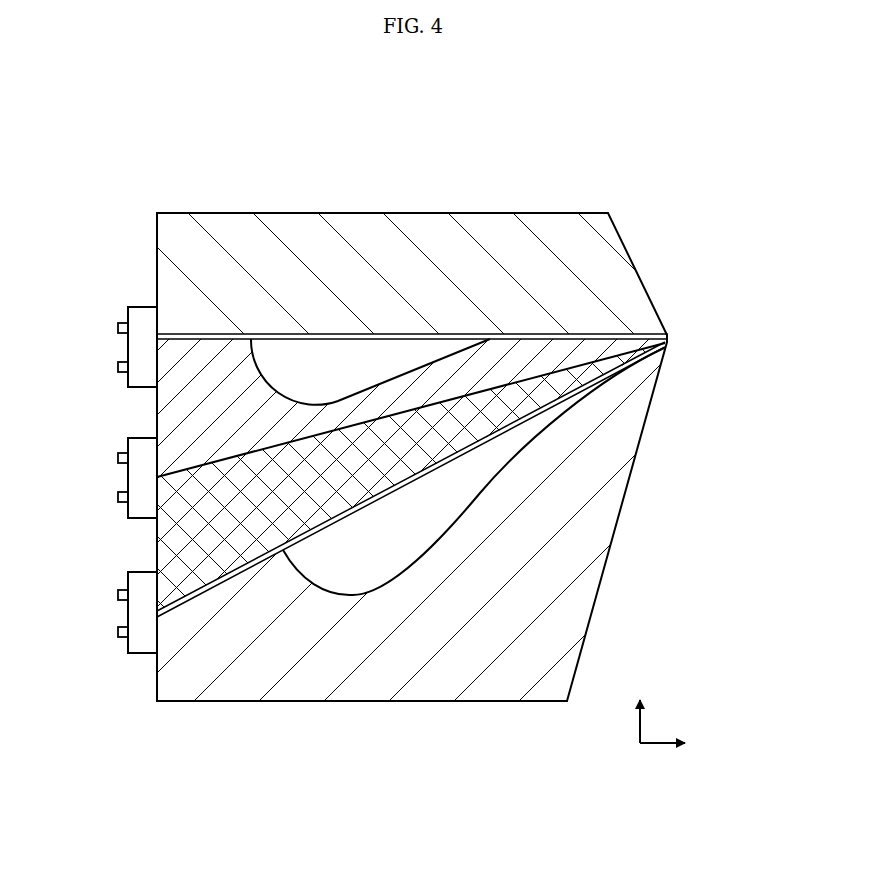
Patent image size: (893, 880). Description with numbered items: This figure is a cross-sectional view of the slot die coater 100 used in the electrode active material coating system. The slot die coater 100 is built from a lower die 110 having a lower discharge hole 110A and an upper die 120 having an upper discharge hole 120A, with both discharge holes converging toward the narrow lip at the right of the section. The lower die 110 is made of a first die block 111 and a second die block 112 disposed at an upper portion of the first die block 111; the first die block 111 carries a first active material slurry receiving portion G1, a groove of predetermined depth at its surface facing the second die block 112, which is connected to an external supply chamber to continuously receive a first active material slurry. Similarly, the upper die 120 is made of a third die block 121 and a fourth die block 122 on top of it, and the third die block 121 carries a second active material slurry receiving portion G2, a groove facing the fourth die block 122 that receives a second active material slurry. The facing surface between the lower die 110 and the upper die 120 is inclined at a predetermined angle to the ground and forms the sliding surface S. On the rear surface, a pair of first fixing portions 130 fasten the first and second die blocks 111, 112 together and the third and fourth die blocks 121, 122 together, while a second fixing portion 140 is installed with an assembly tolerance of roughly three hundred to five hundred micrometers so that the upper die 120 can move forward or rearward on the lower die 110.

The slot die coater 100 is at (442, 166).
The lower die 110 is at (446, 517).
The first die block 111 is at (577, 520).
The second die block 112 is at (518, 400).
The lower discharge hole 110A is at (557, 405).
The upper die 120 is at (390, 410).
The third die block 121 is at (532, 348).
The fourth die block 122 is at (590, 242).
The upper discharge hole 120A is at (640, 335).
The first fixing portion 130 is at (130, 343).
The second fixing portion 140 is at (130, 473).
The first active material slurry receiving portion G1 is at (352, 565).
The second active material slurry receiving portion G2 is at (322, 353).
The sliding surface S is at (553, 362).